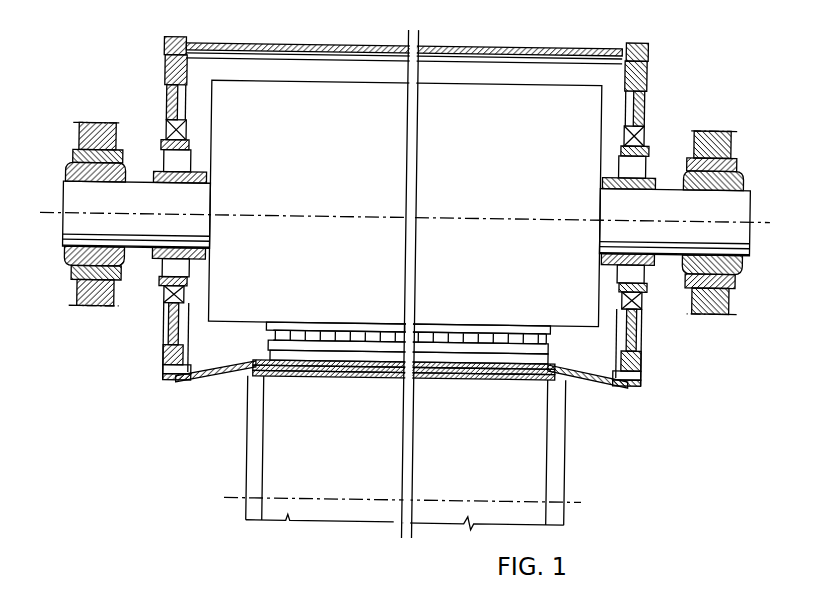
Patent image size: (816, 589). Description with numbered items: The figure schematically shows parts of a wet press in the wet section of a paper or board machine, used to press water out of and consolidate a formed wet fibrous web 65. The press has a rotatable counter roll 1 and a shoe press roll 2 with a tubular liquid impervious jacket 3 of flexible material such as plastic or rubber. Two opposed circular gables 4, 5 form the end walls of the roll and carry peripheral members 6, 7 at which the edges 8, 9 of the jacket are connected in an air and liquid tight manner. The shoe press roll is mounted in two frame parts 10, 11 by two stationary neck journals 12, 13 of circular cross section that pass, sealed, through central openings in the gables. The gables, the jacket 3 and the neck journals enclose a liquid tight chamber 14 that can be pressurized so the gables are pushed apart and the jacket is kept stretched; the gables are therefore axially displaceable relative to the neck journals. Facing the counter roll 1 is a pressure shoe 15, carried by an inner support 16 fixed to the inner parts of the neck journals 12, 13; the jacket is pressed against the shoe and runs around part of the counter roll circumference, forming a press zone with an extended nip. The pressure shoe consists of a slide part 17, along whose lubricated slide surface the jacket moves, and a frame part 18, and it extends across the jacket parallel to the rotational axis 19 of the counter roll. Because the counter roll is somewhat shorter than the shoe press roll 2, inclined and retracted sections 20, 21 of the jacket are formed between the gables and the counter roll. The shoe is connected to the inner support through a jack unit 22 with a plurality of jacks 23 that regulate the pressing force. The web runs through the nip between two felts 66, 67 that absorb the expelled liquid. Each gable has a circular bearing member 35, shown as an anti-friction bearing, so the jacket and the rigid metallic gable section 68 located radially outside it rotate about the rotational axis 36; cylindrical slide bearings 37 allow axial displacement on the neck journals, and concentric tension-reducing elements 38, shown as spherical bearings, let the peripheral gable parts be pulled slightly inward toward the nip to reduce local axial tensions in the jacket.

The counter roll 1 is at (565, 466).
The shoe press roll 2 is at (634, 340).
The tubular liquid impervious jacket 3 is at (505, 47).
The circular gable 4 is at (172, 352).
The circular gable 5 is at (640, 80).
The peripheral member 6 is at (175, 378).
The peripheral member 7 is at (638, 372).
The edge of the jacket 8 is at (192, 385).
The edge of the jacket 9 is at (618, 395).
The frame part 10 is at (70, 284).
The frame part 11 is at (745, 278).
The neck journal 12 is at (76, 186).
The neck journal 13 is at (745, 240).
The liquid tight chamber 14 is at (430, 74).
The pressure shoe 15 is at (342, 360).
The inner support 16 is at (246, 326).
The slide part 17 is at (318, 348).
The frame part of the pressure shoe 18 is at (283, 336).
The rotational axis of the counter roll 19 is at (578, 524).
The section of the jacket 20 is at (215, 378).
The section of the jacket 21 is at (578, 378).
The jack unit 22 is at (462, 333).
The jack 23 is at (383, 333).
The circular bearing member 35 is at (188, 131).
The rotational axis 36 is at (585, 216).
The cylindrical slide bearing 37 is at (172, 170).
The concentric element 38 is at (172, 284).
The fibrous web 65 is at (425, 365).
The felt 66 is at (470, 369).
The felt 67 is at (512, 374).
The gable section 68 is at (170, 322).